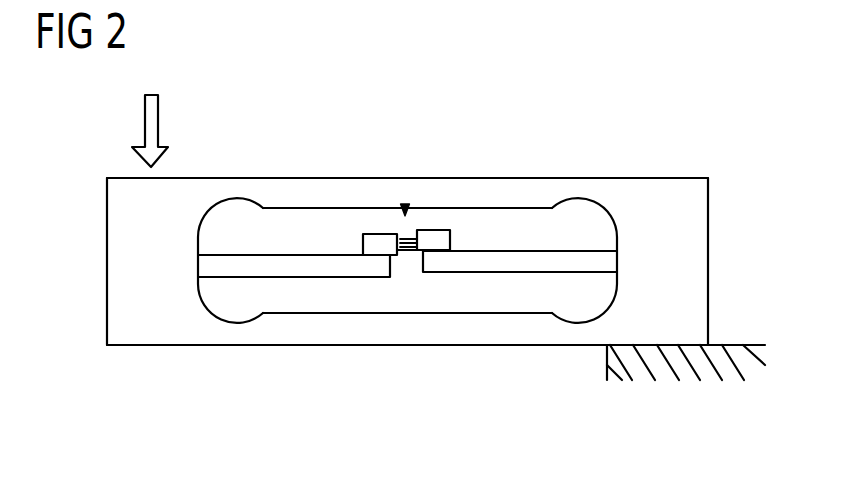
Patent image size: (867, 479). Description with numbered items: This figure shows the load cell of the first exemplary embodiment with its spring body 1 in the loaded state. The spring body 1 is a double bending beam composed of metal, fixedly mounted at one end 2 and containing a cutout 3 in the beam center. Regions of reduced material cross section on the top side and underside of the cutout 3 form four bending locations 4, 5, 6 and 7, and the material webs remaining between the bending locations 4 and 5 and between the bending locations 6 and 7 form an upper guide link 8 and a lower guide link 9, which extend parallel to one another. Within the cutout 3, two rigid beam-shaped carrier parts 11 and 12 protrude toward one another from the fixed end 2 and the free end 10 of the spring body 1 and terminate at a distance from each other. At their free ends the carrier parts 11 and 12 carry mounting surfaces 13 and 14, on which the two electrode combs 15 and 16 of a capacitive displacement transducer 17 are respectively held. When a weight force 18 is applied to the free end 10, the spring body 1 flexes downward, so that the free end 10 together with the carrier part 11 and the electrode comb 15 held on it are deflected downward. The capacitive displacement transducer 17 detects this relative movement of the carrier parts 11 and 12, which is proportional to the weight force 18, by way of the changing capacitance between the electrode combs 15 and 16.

The spring body 1 is at (673, 135).
The end 2 is at (708, 262).
The cutout 3 is at (382, 295).
The bending location 4 is at (570, 187).
The bending location 5 is at (243, 188).
The bending location 6 is at (574, 333).
The bending location 7 is at (243, 333).
The upper guide link 8 is at (510, 187).
The lower guide link 9 is at (442, 333).
The free end 10 is at (107, 262).
The carrier part 11 is at (322, 267).
The carrier part 12 is at (497, 262).
The mounting surface 13 is at (360, 234).
The mounting surface 14 is at (464, 250).
The electrode comb 15 is at (390, 234).
The electrode comb 16 is at (432, 236).
The capacitive displacement transducer 17 is at (406, 204).
The weight force 18 is at (145, 115).